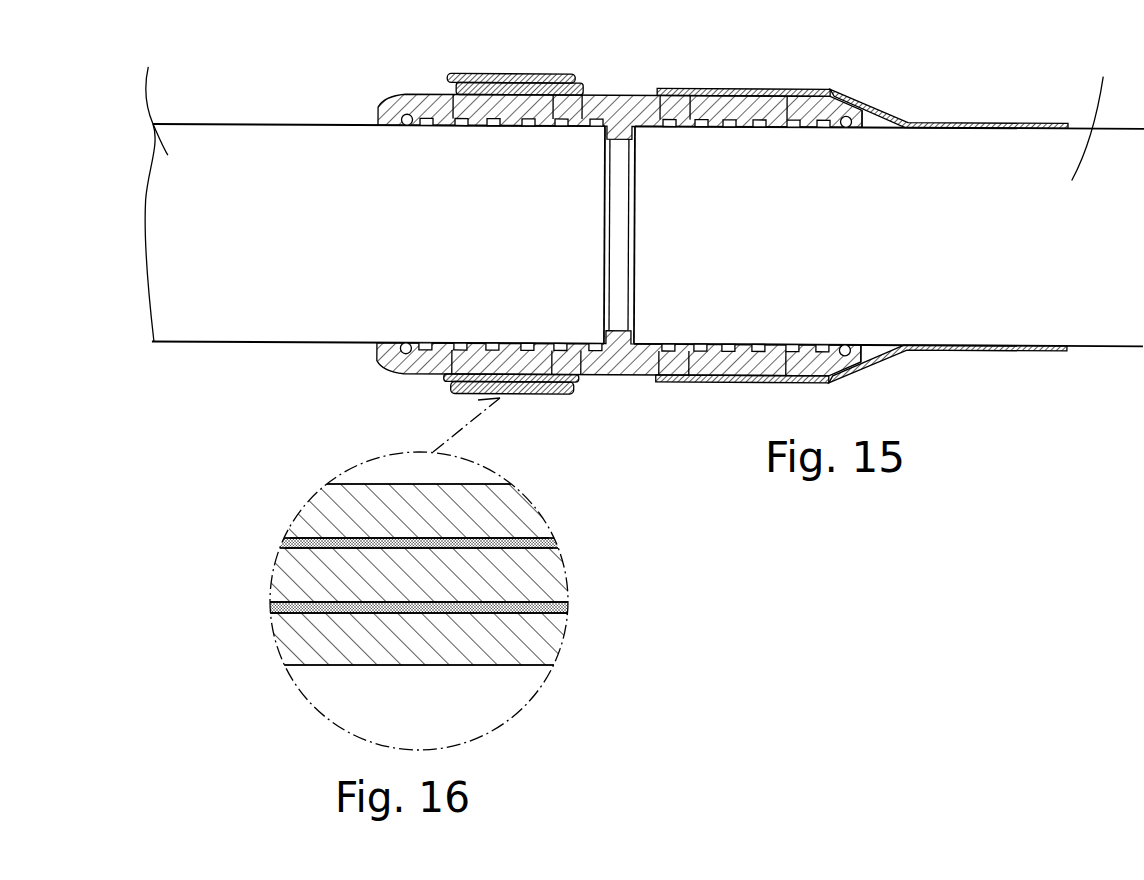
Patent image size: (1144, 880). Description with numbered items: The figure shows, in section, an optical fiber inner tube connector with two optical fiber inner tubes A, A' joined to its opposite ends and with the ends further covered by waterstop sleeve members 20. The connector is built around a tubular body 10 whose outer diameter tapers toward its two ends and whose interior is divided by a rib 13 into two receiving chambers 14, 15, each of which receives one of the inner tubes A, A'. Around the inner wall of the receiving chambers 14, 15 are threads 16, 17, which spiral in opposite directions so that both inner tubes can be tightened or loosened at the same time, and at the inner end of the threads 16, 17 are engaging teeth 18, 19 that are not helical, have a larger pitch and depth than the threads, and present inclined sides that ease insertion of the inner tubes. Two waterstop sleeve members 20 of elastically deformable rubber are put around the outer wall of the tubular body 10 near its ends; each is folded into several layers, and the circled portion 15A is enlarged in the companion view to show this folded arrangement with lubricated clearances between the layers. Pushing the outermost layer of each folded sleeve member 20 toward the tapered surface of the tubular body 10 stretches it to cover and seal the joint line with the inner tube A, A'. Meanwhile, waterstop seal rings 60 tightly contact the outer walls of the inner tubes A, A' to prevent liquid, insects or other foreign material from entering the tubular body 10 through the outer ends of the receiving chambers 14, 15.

In FIG. 15, the tubular body 10 is at (618, 100).
In FIG. 15, the rib 13 is at (620, 237).
In FIG. 15, the receiving chamber 14 is at (388, 121).
In FIG. 15, the receiving chamber 15 is at (874, 115).
In FIG. 15, the circled portion 15A is at (500, 398).
In FIG. 16, the circled portion 15A is at (525, 707).
In FIG. 15, the thread 16 is at (406, 116).
In FIG. 15, the thread 17 is at (787, 118).
In FIG. 15, the engaging tooth 18 is at (554, 118).
In FIG. 15, the engaging tooth 19 is at (661, 118).
In FIG. 15, the waterstop sleeve member 20 is at (506, 72).
In FIG. 15, the waterstop seal ring 60 is at (834, 113).
In FIG. 15, the optical fiber inner tube A is at (154, 187).
In FIG. 15, the optical fiber inner tube A' is at (1097, 109).